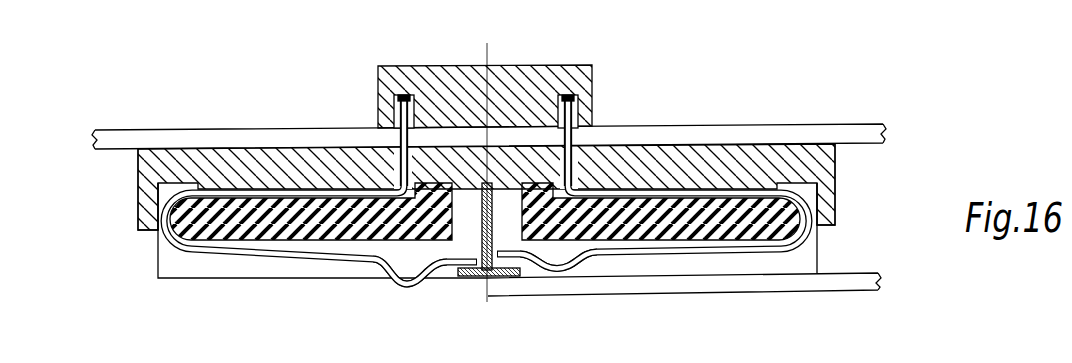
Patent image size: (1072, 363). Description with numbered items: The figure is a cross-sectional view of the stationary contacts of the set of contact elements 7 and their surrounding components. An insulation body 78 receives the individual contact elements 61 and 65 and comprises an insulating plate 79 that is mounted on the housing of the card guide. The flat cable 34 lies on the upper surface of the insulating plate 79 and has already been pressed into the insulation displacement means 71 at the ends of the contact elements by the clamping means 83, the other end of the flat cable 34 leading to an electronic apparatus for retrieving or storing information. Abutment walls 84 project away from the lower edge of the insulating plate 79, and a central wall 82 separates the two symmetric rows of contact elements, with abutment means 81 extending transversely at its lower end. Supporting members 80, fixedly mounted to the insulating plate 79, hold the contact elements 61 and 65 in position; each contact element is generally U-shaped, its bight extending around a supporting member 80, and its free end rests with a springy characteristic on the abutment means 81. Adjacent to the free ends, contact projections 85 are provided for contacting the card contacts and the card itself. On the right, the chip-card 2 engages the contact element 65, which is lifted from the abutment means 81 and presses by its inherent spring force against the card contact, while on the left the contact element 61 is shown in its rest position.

The chip-card 2 is at (831, 283).
The set of contact elements 7 is at (865, 222).
The flat cable 34 is at (728, 133).
The contact element 61 is at (277, 266).
The contact element 65 is at (591, 276).
The insulation displacement means 71 is at (400, 110).
The insulation body 78 is at (846, 193).
The insulating plate 79 is at (818, 157).
The supporting members 80 is at (394, 224).
The abutment means 81 is at (473, 278).
The wall 82 is at (493, 232).
The clamping means 83 is at (535, 76).
The abutment walls 84 is at (147, 213).
The contact projections 85 is at (404, 287).